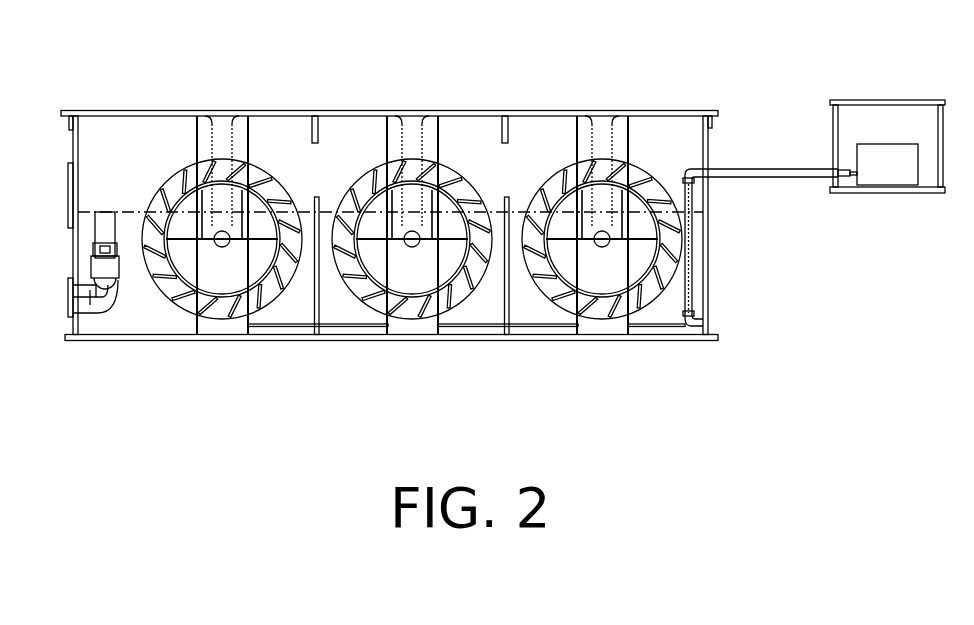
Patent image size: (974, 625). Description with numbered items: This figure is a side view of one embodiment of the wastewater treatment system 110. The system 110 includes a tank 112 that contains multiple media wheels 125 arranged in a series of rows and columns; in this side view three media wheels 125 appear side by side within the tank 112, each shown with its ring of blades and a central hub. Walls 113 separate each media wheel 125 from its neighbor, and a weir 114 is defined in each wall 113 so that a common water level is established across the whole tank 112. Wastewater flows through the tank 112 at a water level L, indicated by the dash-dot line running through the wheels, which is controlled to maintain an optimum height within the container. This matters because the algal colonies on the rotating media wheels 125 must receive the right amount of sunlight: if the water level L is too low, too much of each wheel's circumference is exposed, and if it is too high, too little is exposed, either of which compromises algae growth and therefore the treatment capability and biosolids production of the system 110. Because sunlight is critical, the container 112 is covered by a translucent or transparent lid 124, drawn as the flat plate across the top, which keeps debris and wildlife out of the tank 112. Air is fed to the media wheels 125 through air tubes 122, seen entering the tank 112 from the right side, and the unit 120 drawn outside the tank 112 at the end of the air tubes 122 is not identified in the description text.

The wastewater treatment system 110 is at (140, 106).
The tank 112 is at (709, 140).
The walls 113 is at (318, 129).
The weir 114 is at (316, 197).
The control box 120 is at (888, 100).
The air tubes 122 is at (773, 180).
The lid 124 is at (620, 110).
The media wheels 125 is at (185, 178).
The water level L is at (137, 212).